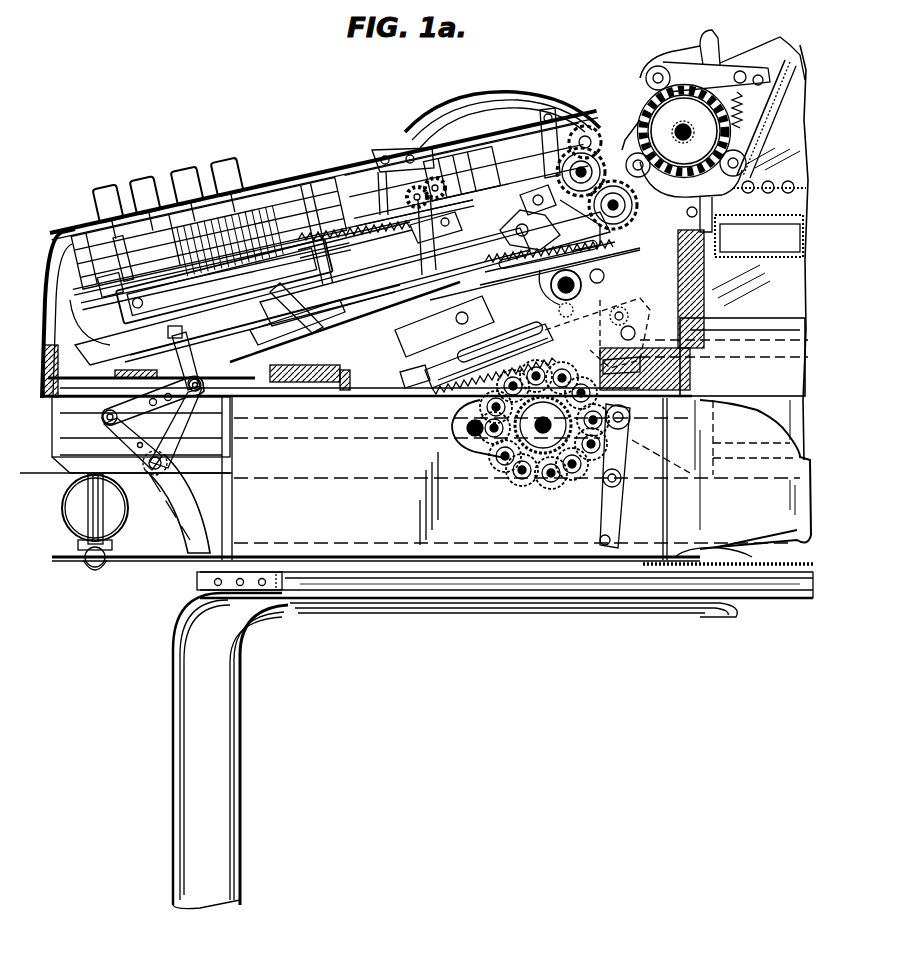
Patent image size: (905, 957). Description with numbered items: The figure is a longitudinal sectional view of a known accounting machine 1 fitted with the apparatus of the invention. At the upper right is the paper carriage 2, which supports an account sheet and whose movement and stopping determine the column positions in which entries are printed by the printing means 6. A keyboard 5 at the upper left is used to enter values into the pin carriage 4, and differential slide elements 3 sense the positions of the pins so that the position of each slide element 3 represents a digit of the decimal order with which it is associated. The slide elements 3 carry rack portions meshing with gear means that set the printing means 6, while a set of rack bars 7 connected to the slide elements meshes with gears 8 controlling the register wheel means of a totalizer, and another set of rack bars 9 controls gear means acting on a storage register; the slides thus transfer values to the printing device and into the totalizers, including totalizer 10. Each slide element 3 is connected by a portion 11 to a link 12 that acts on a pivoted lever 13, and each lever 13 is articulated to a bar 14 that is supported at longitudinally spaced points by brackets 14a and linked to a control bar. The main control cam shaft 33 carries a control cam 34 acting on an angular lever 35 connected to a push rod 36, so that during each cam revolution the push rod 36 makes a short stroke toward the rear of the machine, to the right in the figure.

The accounting machine 1 is at (338, 170).
The paper carriage 2 is at (772, 50).
The differential slide element 3 is at (330, 312).
The pin carriage 4 is at (168, 318).
The keyboard 5 is at (176, 215).
The printing means 6 is at (592, 126).
The rack bar 7 is at (325, 250).
The gear 8 is at (405, 190).
The rack bar 9 is at (418, 390).
The totalizer 10 is at (548, 478).
The portion 11 is at (228, 388).
The link 12 is at (190, 400).
The pivoted lever 13 is at (185, 510).
The bar 14 is at (472, 590).
The bracket 14a is at (285, 600).
The main control cam shaft 33 is at (560, 296).
The control cam 34 is at (540, 290).
The angular lever 35 is at (632, 303).
The push rod 36 is at (742, 340).